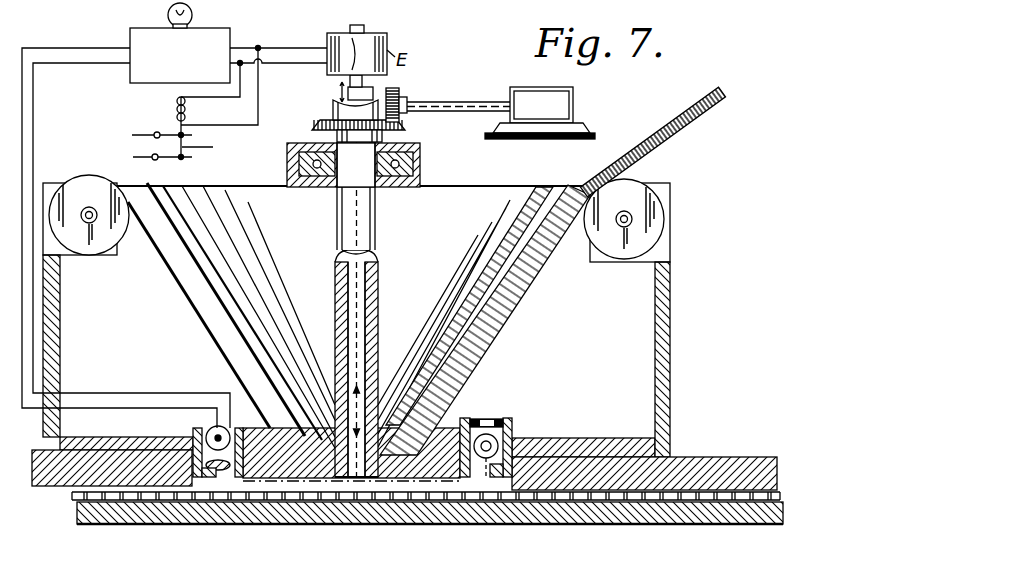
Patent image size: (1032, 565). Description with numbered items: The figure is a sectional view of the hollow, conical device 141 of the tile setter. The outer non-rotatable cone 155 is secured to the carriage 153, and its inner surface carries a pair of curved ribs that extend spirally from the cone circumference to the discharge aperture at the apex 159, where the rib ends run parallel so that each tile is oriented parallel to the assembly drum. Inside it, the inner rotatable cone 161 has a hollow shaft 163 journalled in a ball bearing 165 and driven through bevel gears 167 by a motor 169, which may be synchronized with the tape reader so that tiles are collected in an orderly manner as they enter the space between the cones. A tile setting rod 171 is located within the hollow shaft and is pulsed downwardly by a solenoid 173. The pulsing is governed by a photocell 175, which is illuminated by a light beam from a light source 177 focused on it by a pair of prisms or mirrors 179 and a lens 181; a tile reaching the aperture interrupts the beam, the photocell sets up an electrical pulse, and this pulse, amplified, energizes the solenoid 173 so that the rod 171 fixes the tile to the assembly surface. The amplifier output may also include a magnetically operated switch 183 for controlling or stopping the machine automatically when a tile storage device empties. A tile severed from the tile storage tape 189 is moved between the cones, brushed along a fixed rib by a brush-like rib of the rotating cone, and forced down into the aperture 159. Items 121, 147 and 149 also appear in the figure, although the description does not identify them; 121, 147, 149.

The pulley 121 is at (636, 192).
The hollow conical device 141 is at (557, 172).
The coupling 147 is at (378, 82).
The guide rail 149 is at (80, 493).
The carriage 153 is at (690, 457).
The outer non-rotatable cone 155 is at (518, 306).
The discharge aperture at the apex 159 is at (356, 481).
The inner rotatable cone 161 is at (514, 260).
The hollow shaft 163 is at (329, 216).
The ball bearing 165 is at (421, 160).
The bevel gears 167 is at (400, 122).
The motor 169 is at (573, 100).
The tile setting rod 171 is at (342, 278).
The solenoid 173 is at (328, 77).
The photocell 175 is at (212, 432).
The light source 177 is at (508, 430).
The prisms or mirrors 179 is at (208, 474).
The lens 181 is at (221, 470).
The magnetically operated switch 183 is at (160, 114).
The tile storage tape 189 is at (692, 117).